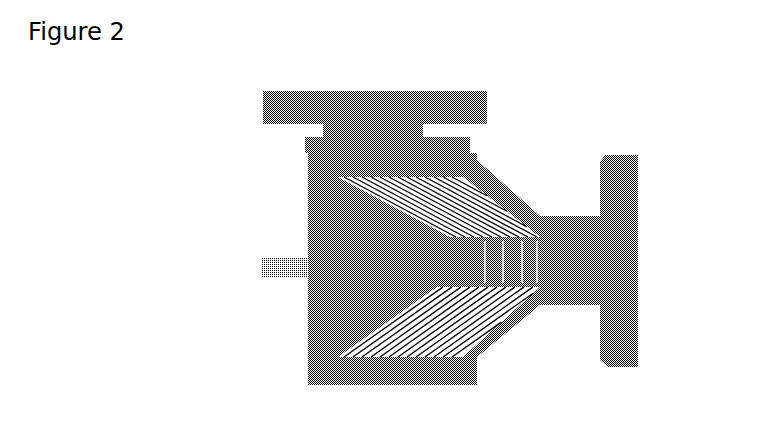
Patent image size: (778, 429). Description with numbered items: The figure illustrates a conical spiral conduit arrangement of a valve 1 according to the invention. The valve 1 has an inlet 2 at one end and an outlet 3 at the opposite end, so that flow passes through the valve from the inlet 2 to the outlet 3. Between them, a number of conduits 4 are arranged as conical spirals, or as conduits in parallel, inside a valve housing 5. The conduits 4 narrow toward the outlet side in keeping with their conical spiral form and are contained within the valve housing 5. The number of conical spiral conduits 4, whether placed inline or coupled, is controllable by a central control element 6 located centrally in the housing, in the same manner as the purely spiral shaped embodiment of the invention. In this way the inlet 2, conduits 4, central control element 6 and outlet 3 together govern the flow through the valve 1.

The valve 1 is at (272, 192).
The inlet 2 is at (363, 120).
The outlet 3 is at (620, 263).
The conduits 4 is at (470, 208).
The valve housing 5 is at (503, 348).
The central control element 6 is at (393, 280).